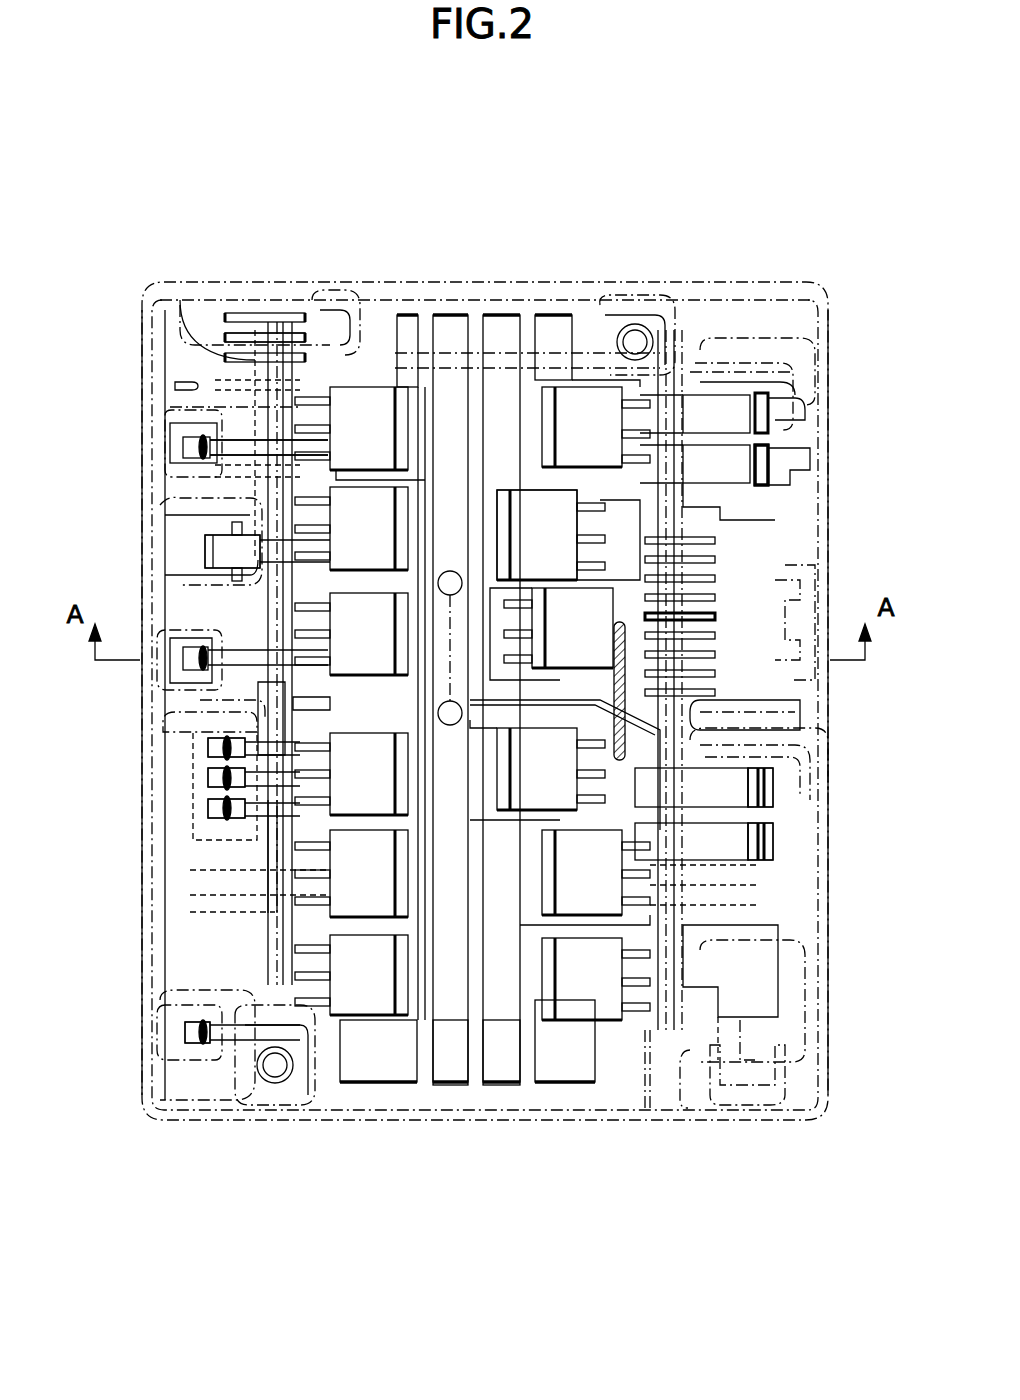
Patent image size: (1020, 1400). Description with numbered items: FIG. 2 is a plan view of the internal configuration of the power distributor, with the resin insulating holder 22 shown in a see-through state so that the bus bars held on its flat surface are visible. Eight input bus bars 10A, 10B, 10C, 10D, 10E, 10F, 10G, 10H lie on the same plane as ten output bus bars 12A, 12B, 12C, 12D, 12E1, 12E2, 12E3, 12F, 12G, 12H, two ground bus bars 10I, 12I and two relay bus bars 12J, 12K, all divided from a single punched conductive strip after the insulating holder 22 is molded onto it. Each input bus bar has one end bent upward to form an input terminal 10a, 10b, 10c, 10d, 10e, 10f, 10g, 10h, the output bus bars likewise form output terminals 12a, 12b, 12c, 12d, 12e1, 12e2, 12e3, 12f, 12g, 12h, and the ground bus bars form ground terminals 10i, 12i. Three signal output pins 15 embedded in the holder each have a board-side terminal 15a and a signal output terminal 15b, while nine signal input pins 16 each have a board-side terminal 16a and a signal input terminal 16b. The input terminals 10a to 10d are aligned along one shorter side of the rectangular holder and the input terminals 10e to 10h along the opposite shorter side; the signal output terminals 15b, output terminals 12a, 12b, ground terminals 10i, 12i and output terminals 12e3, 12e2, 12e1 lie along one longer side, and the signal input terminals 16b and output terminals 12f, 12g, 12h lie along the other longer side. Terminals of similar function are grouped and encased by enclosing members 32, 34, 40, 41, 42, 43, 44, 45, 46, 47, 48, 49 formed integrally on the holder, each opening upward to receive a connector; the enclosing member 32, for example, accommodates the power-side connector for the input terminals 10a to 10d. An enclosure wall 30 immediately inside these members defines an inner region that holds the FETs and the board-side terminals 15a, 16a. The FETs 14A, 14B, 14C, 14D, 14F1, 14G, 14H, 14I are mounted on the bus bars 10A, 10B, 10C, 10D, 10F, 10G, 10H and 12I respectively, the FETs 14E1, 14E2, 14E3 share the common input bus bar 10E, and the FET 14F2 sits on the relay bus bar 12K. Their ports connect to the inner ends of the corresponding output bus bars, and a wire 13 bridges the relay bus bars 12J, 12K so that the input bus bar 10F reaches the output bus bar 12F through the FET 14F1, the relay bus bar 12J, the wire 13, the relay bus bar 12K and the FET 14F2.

The insulating holder 22 is at (806, 290).
The enclosing member 40 is at (150, 292).
The enclosing member 41 is at (150, 420).
The enclosing member 42 is at (150, 570).
The enclosing member 43 is at (150, 670).
The enclosing member 45 is at (180, 1105).
The signal output pin 15 is at (250, 336).
The board-side terminal 15a is at (330, 325).
The signal output terminal 15b is at (225, 336).
The input bus bar 10A is at (400, 330).
The input terminal 10a is at (410, 345).
The input bus bar 10B is at (440, 330).
The input terminal 10b is at (450, 340).
The input bus bar 10C is at (502, 335).
The input terminal 10c is at (495, 335).
The input bus bar 10D is at (556, 340).
The input terminal 10d is at (548, 335).
The input bus bar 10E is at (365, 1060).
The input terminal 10e is at (402, 1085).
The input bus bar 10F is at (445, 1082).
The input terminal 10f is at (460, 1085).
The input bus bar 10G is at (493, 1082).
The input terminal 10g is at (512, 1085).
The input bus bar 10H is at (552, 1082).
The input terminal 10h is at (582, 1085).
The ground bus bar 10I is at (200, 690).
The ground terminal 10i is at (210, 680).
The enclosing member 32 is at (608, 312).
The enclosing member 34 is at (300, 1095).
The enclosure wall 30 is at (660, 1040).
The FET 14A is at (384, 450).
The FET 14B is at (335, 505).
The FET 14C is at (560, 505).
The FET 14D is at (590, 400).
The FET 14E1 is at (340, 1000).
The FET 14E2 is at (340, 880).
The FET 14E3 is at (340, 795).
The FET 14F1 is at (567, 777).
The FET 14F2 is at (600, 598).
The FET 14G is at (605, 905).
The FET 14H is at (598, 1002).
The FET 14I is at (383, 608).
The signal input pin 16 is at (690, 522).
The board-side terminal 16a is at (645, 535).
The signal input terminal 16b is at (700, 560).
The wire 13 is at (622, 758).
The enclosing member 44 is at (275, 830).
The output bus bar 12A is at (190, 438).
The output terminal 12a is at (238, 440).
The output bus bar 12B is at (230, 535).
The output terminal 12b is at (222, 550).
The output bus bar 12C is at (790, 412).
The output terminal 12c is at (775, 452).
The output bus bar 12D is at (735, 420).
The output terminal 12d is at (720, 410).
The output bus bar 12E1 is at (185, 1030).
The output terminal 12e1 is at (205, 1045).
The output bus bar 12E2 is at (225, 812).
The output terminal 12e2 is at (230, 803).
The output bus bar 12E3 is at (225, 782).
The output terminal 12e3 is at (230, 772).
The output bus bar 12F is at (745, 770).
The output terminal 12f is at (773, 795).
The output bus bar 12G is at (775, 840).
The output terminal 12g is at (770, 860).
The output bus bar 12H is at (760, 975).
The output terminal 12h is at (735, 1035).
The ground bus bar 12I is at (220, 752).
The ground terminal 12i is at (228, 743).
The relay bus bar 12J is at (720, 722).
The relay bus bar 12K is at (715, 617).
The enclosing member 46 is at (820, 345).
The enclosing member 47 is at (840, 655).
The enclosing member 48 is at (830, 762).
The enclosing member 49 is at (820, 1050).